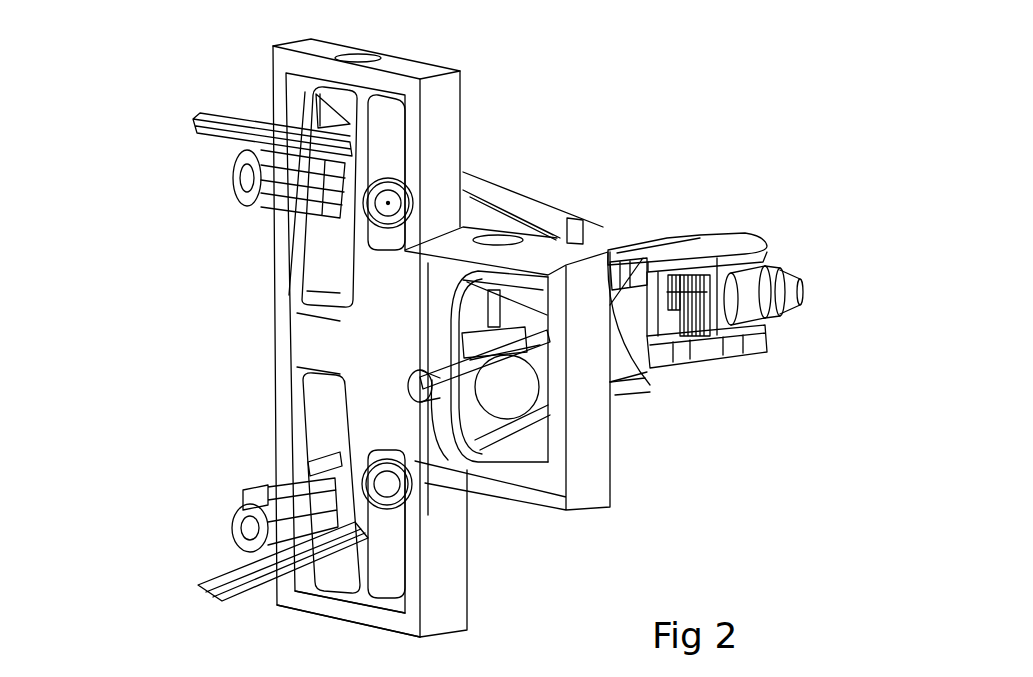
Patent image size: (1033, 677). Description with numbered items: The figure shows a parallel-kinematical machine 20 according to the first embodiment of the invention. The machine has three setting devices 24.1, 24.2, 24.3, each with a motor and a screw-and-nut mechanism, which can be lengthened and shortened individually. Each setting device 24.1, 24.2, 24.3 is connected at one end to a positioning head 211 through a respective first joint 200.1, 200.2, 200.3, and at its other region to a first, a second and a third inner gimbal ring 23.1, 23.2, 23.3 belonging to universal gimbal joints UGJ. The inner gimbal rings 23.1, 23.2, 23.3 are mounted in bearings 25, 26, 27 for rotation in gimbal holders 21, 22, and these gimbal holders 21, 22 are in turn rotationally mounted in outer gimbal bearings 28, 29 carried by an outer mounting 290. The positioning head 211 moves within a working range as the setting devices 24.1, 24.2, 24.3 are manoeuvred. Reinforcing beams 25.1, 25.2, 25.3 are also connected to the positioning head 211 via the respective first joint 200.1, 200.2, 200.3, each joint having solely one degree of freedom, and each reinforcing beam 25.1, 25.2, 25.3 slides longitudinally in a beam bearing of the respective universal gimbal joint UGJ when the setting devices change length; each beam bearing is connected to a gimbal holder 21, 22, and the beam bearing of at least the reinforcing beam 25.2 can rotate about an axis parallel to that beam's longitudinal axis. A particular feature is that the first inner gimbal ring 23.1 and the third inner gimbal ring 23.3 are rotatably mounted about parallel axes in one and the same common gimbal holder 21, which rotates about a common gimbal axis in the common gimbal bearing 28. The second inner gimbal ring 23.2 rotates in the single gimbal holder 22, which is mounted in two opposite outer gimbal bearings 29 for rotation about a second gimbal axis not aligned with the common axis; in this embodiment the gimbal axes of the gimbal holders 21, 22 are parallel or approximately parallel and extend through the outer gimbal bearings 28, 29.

The parallel-kinematical machine 20 is at (600, 170).
The gimbal holder 21 is at (370, 352).
The gimbal holder 22 is at (543, 460).
The first inner gimbal ring 23.1 is at (340, 232).
The second inner gimbal ring 23.2 is at (538, 327).
The third inner gimbal ring 23.3 is at (333, 435).
The setting device 24.1 is at (250, 204).
The setting device 24.2 is at (433, 400).
The setting device 24.3 is at (268, 480).
The bearing 25 is at (393, 187).
The reinforcing beam 25.1 is at (243, 114).
The reinforcing beam 25.2 is at (510, 383).
The reinforcing beam 25.3 is at (214, 576).
The bearing 26 is at (520, 450).
The bearing 27 is at (392, 503).
The outer gimbal bearing 28 is at (358, 56).
The outer gimbal bearing 29 is at (497, 240).
The first joint 200.1 is at (617, 247).
The first joint 200.2 is at (637, 388).
The first joint 200.3 is at (636, 390).
The positioning head 211 is at (643, 250).
The outer mounting 290 is at (445, 583).
The universal gimbal joint UGJ is at (330, 127).